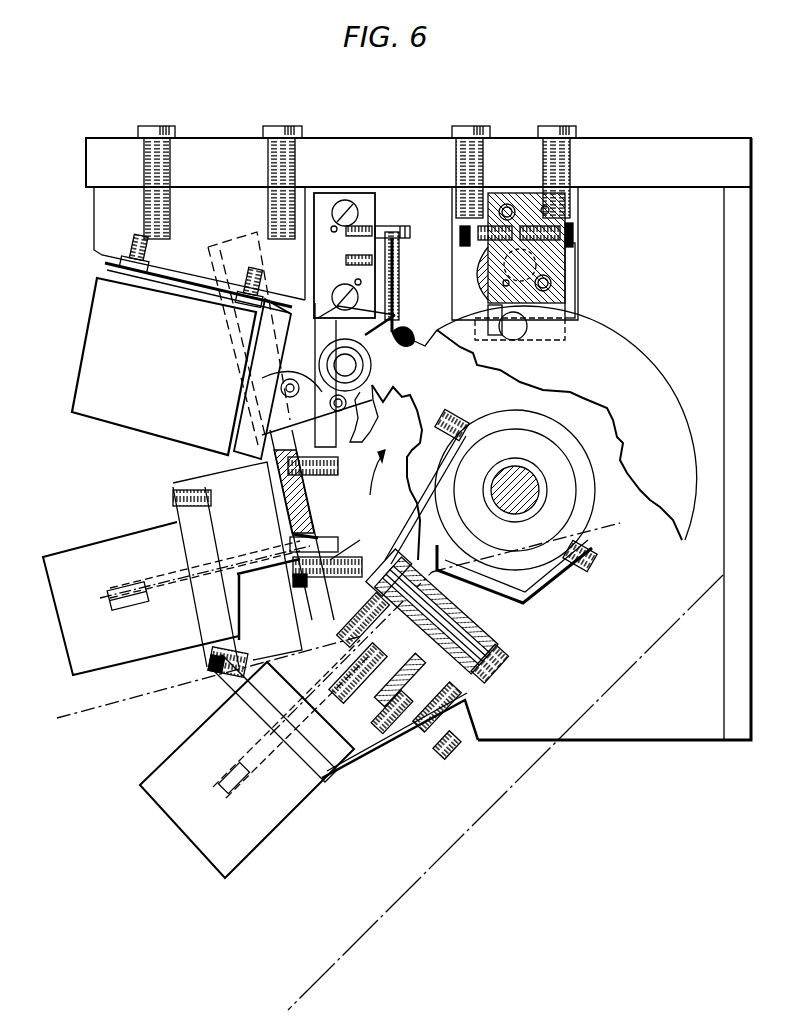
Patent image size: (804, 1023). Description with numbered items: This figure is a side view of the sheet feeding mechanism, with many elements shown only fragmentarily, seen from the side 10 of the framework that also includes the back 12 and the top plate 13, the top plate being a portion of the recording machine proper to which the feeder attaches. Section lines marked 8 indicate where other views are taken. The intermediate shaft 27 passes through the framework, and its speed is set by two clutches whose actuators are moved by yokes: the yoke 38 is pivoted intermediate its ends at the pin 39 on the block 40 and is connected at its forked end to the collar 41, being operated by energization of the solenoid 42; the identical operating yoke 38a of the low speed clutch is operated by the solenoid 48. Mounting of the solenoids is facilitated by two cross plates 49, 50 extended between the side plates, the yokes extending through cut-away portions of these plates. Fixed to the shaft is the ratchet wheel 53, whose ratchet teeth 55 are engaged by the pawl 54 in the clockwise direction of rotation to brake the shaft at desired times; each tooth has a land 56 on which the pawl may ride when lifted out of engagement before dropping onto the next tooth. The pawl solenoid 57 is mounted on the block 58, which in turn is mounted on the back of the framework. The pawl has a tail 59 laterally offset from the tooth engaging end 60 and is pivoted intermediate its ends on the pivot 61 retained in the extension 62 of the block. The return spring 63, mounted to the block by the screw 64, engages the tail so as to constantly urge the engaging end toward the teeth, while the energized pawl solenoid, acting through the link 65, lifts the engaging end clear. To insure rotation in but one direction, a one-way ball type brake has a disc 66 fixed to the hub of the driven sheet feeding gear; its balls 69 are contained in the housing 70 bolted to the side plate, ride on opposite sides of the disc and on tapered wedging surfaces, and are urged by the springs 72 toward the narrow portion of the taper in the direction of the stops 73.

The section line 8- 8 is at (723, 575).
The side 10 is at (57, 718).
The back 12 is at (652, 138).
The top plate 13 is at (752, 717).
The intermediate shaft 27 is at (530, 476).
The yoke 38 is at (515, 605).
The operating yoke 38a is at (172, 576).
The pin 39 is at (455, 617).
The block 40 is at (490, 648).
The collar 41 is at (560, 436).
The solenoid 42 is at (220, 870).
The solenoid 48 is at (45, 578).
The cross plate 49 is at (452, 752).
The cross plate 50 is at (295, 603).
The ratchet wheel 53 is at (408, 396).
The pawl 54 is at (288, 379).
The ratchet teeth 55 is at (372, 424).
The land 56 is at (350, 512).
The pawl solenoid 57 is at (182, 344).
The block 58 is at (199, 243).
The tail 59 is at (413, 348).
The tooth engaging end 60 is at (340, 488).
The pivot 61 is at (344, 348).
The extension 62 is at (372, 210).
The return spring 63 is at (400, 291).
The screw 64 is at (411, 231).
The link 65 is at (293, 378).
The disc 66 is at (644, 372).
The balls 69 is at (520, 342).
The housing 70 is at (580, 283).
The springs 72 is at (553, 345).
The stops 73 is at (498, 338).